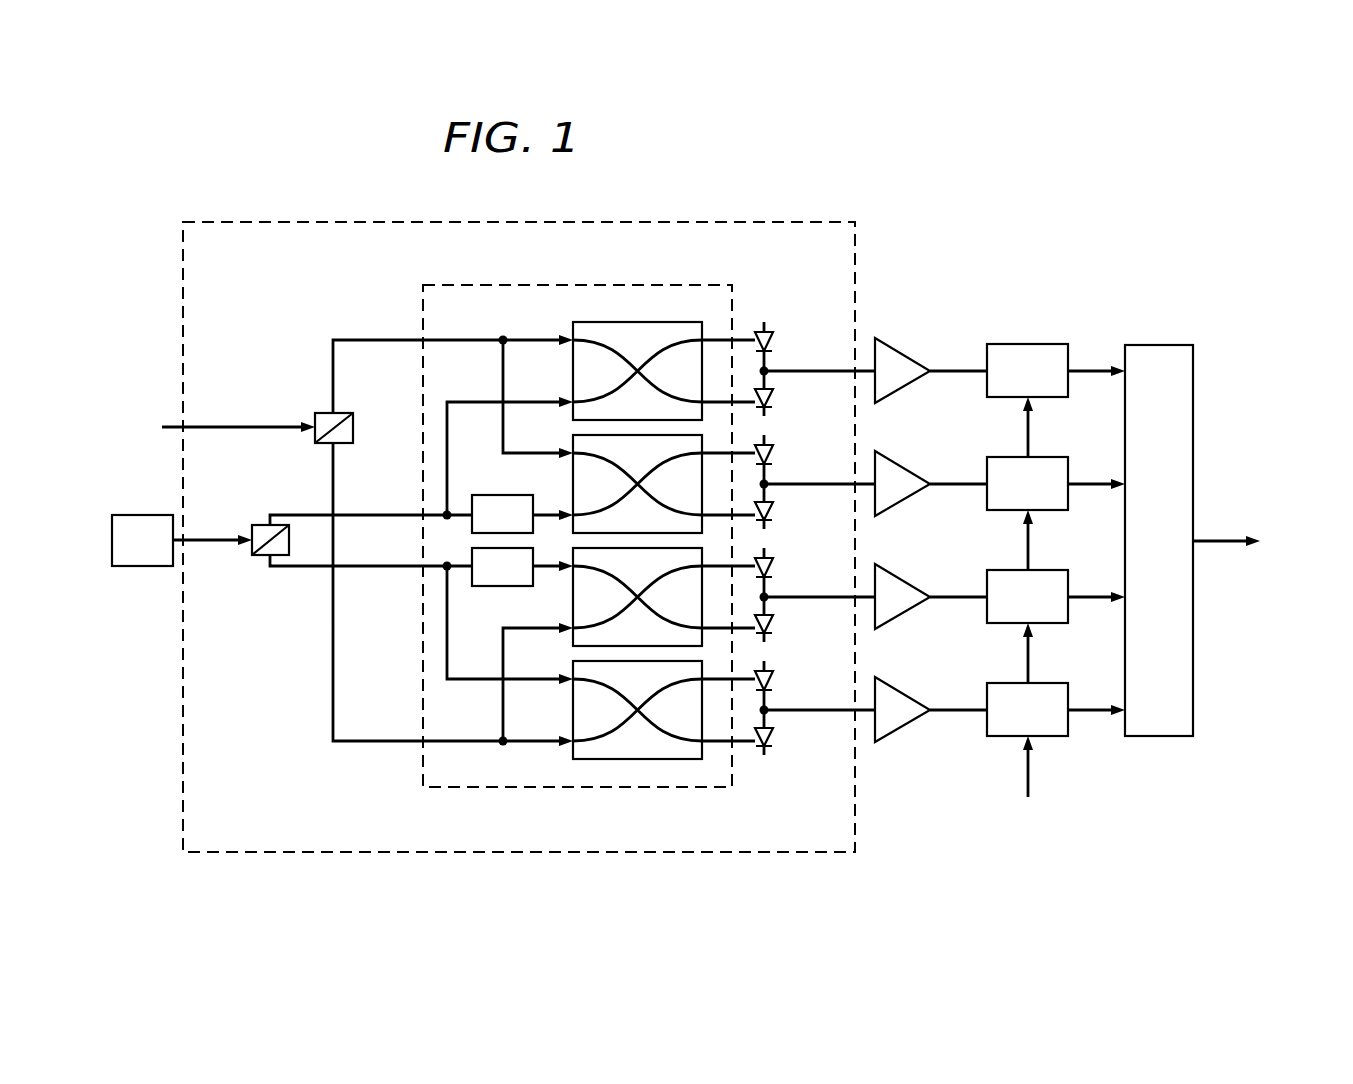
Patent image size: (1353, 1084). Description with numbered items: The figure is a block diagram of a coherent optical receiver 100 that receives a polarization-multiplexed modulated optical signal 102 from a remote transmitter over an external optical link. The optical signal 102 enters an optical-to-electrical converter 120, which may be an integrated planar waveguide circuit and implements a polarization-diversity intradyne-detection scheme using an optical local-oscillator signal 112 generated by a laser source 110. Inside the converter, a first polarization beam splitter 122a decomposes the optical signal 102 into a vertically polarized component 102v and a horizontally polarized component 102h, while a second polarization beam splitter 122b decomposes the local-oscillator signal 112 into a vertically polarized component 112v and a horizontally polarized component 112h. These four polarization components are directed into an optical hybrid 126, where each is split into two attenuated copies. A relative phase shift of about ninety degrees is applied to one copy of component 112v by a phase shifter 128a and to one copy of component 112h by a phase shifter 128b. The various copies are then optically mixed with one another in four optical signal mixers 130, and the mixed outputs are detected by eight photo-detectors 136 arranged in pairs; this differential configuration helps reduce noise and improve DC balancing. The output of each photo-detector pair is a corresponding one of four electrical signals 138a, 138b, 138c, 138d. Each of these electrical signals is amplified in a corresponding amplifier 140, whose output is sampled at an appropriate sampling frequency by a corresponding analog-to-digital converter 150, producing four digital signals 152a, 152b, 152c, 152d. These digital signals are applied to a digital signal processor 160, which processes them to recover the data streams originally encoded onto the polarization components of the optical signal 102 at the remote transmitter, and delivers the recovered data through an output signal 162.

The coherent optical receiver 100 is at (527, 186).
The polarization-multiplexed modulated optical signal 102 is at (214, 425).
The vertically polarized component 102v is at (333, 383).
The horizontally polarized component 102h is at (333, 478).
The laser source 110 is at (112, 537).
The optical local-oscillator signal 112 is at (212, 546).
The vertically polarized component 112v is at (397, 516).
The horizontally polarized component 112h is at (378, 570).
The optical-to-electrical converter 120 is at (183, 240).
The polarization beam splitter 122a is at (316, 441).
The polarization beam splitter 122b is at (257, 556).
The optical hybrid 126 is at (586, 285).
The phase shifter 128a is at (492, 495).
The phase shifter 128b is at (494, 586).
The optical signal mixer 130 is at (655, 351).
The photo-detector 136 is at (765, 308).
The electrical signal 138a is at (814, 367).
The electrical signal 138b is at (814, 480).
The electrical signal 138c is at (814, 593).
The electrical signal 138d is at (814, 706).
The amplifier 140 is at (898, 350).
The analog-to-digital converter 150 is at (1010, 398).
The digital signal 152a is at (1094, 366).
The digital signal 152b is at (1094, 479).
The digital signal 152c is at (1094, 592).
The digital signal 152d is at (1094, 705).
The digital signal processor 160 is at (1152, 345).
The output signal 162 is at (1222, 538).